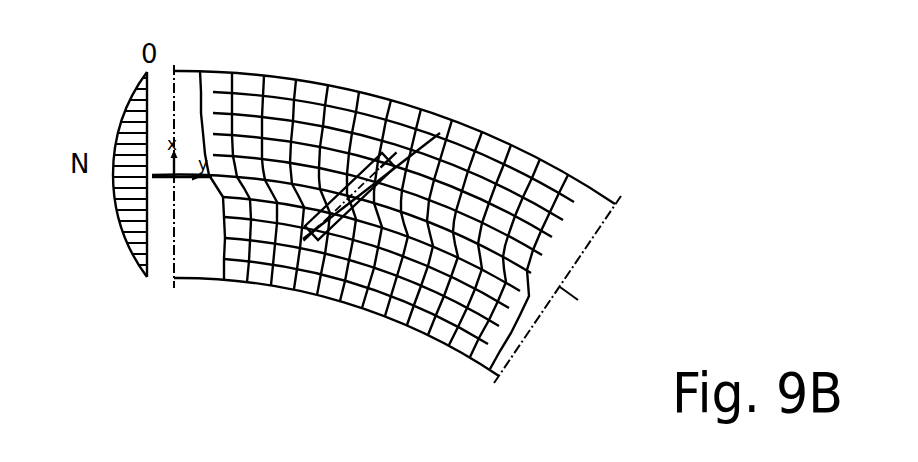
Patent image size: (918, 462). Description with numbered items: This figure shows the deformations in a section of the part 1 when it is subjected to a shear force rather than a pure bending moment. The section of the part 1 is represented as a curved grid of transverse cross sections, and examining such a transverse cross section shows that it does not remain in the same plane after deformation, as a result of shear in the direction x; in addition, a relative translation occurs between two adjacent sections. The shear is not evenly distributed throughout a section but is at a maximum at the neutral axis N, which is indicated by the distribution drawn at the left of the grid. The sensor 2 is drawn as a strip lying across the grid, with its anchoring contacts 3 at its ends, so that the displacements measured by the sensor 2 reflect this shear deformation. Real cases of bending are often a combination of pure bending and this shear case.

The part 1 is at (547, 174).
The sensor 2 is at (352, 172).
The anchoring contacts 3 is at (440, 133).